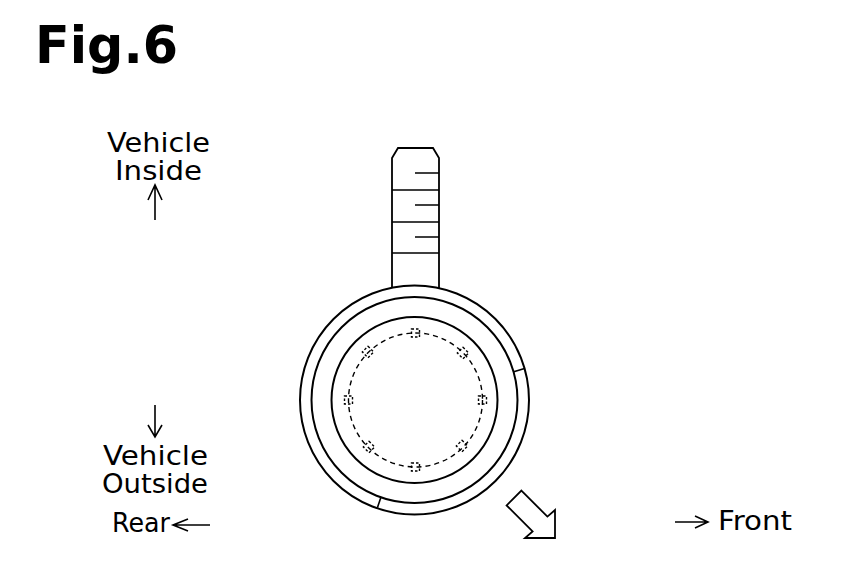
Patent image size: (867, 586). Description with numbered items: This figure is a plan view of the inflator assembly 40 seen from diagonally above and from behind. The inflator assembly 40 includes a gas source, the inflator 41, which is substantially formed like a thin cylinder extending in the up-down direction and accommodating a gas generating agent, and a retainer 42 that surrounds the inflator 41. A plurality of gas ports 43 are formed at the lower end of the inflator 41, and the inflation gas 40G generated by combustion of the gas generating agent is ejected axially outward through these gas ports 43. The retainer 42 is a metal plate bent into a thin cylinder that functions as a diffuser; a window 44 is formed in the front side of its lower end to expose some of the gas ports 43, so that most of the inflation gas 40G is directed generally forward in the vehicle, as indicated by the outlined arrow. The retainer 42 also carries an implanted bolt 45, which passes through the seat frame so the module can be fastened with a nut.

The inflator assembly 40 is at (433, 372).
The inflation gas 40G is at (533, 502).
The inflator 41 is at (421, 378).
The retainer 42 is at (513, 347).
The gas ports 43 is at (383, 338).
The window 44 is at (526, 372).
The bolt 45 is at (392, 212).